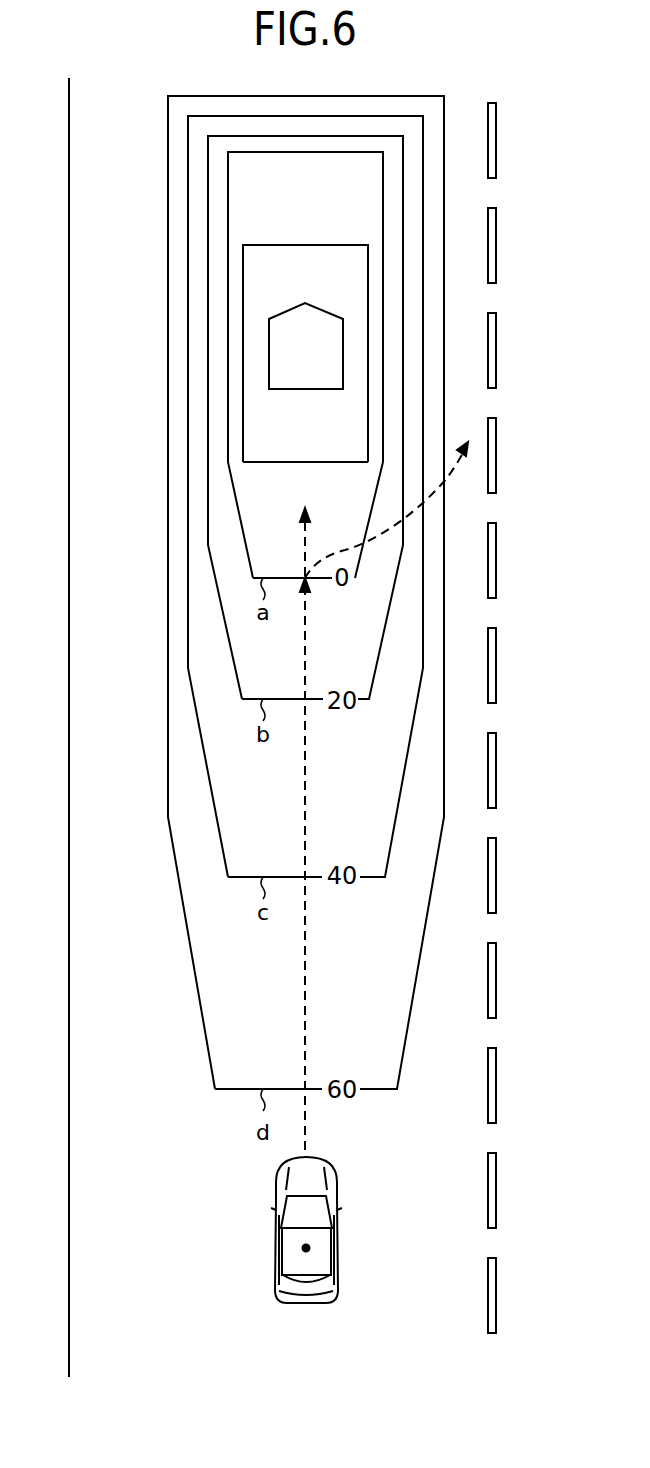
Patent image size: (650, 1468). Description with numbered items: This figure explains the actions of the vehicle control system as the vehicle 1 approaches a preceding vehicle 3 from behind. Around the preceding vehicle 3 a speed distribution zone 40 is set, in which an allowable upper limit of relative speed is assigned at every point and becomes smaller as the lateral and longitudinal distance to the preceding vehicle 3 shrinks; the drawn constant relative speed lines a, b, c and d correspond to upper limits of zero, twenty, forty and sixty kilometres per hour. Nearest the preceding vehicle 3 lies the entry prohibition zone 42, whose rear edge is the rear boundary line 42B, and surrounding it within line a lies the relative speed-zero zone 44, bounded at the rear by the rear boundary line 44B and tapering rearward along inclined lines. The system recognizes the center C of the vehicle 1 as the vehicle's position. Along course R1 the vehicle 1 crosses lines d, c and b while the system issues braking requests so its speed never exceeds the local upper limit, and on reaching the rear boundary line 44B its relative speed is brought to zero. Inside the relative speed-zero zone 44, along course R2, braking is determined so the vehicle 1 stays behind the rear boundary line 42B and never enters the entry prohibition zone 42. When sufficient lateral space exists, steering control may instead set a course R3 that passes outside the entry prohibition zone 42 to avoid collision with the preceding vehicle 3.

The vehicle 1 is at (317, 1245).
The preceding vehicle 3 is at (280, 350).
The speed distribution zone 40 is at (168, 142).
The entry prohibition zone 42 is at (243, 263).
The rear boundary line 42B is at (298, 462).
The relative speed-zero zone 44 is at (236, 497).
The rear boundary line 44B is at (262, 577).
The center C is at (308, 1252).
The course R1 is at (303, 655).
The course R2 is at (303, 570).
The course R3 is at (456, 478).